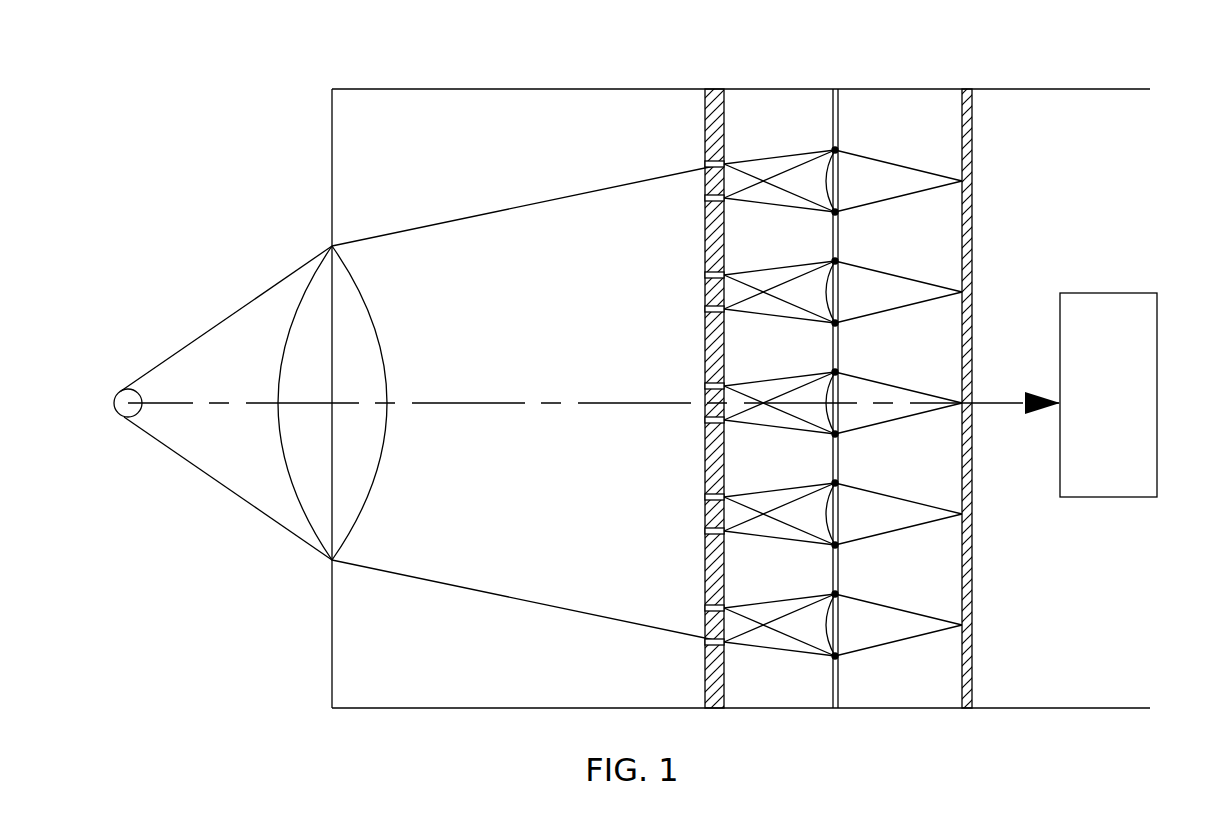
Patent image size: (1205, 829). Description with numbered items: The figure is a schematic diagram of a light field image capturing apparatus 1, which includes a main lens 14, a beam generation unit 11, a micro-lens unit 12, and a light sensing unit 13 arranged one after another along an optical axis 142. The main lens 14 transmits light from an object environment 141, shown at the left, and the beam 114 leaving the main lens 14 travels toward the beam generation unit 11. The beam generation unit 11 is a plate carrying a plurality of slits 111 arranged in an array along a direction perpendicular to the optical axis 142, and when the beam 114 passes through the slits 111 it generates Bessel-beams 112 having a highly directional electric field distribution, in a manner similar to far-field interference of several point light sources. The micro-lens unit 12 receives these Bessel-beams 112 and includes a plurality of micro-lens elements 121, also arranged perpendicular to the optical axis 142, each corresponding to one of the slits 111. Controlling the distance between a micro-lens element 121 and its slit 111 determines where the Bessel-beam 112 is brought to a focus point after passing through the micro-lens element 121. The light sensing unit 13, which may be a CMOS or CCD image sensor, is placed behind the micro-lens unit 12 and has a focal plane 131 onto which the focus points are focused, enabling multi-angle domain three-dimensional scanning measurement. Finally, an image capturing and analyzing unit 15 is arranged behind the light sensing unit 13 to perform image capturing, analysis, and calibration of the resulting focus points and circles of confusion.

The light field image capturing apparatus 1 is at (648, 62).
The beam generation unit 11 is at (600, 642).
The slits 111 is at (705, 150).
The Bessel-beams 112 is at (766, 198).
The beam 114 is at (512, 195).
The micro-lens unit 12 is at (840, 113).
The micro-lens elements 121 is at (822, 155).
The light sensing unit 13 is at (974, 112).
The focal plane 131 is at (962, 145).
The main lens 14 is at (316, 282).
The object environment 141 is at (120, 395).
The optical axis 142 is at (499, 402).
The image capturing and analyzing unit 15 is at (1122, 300).